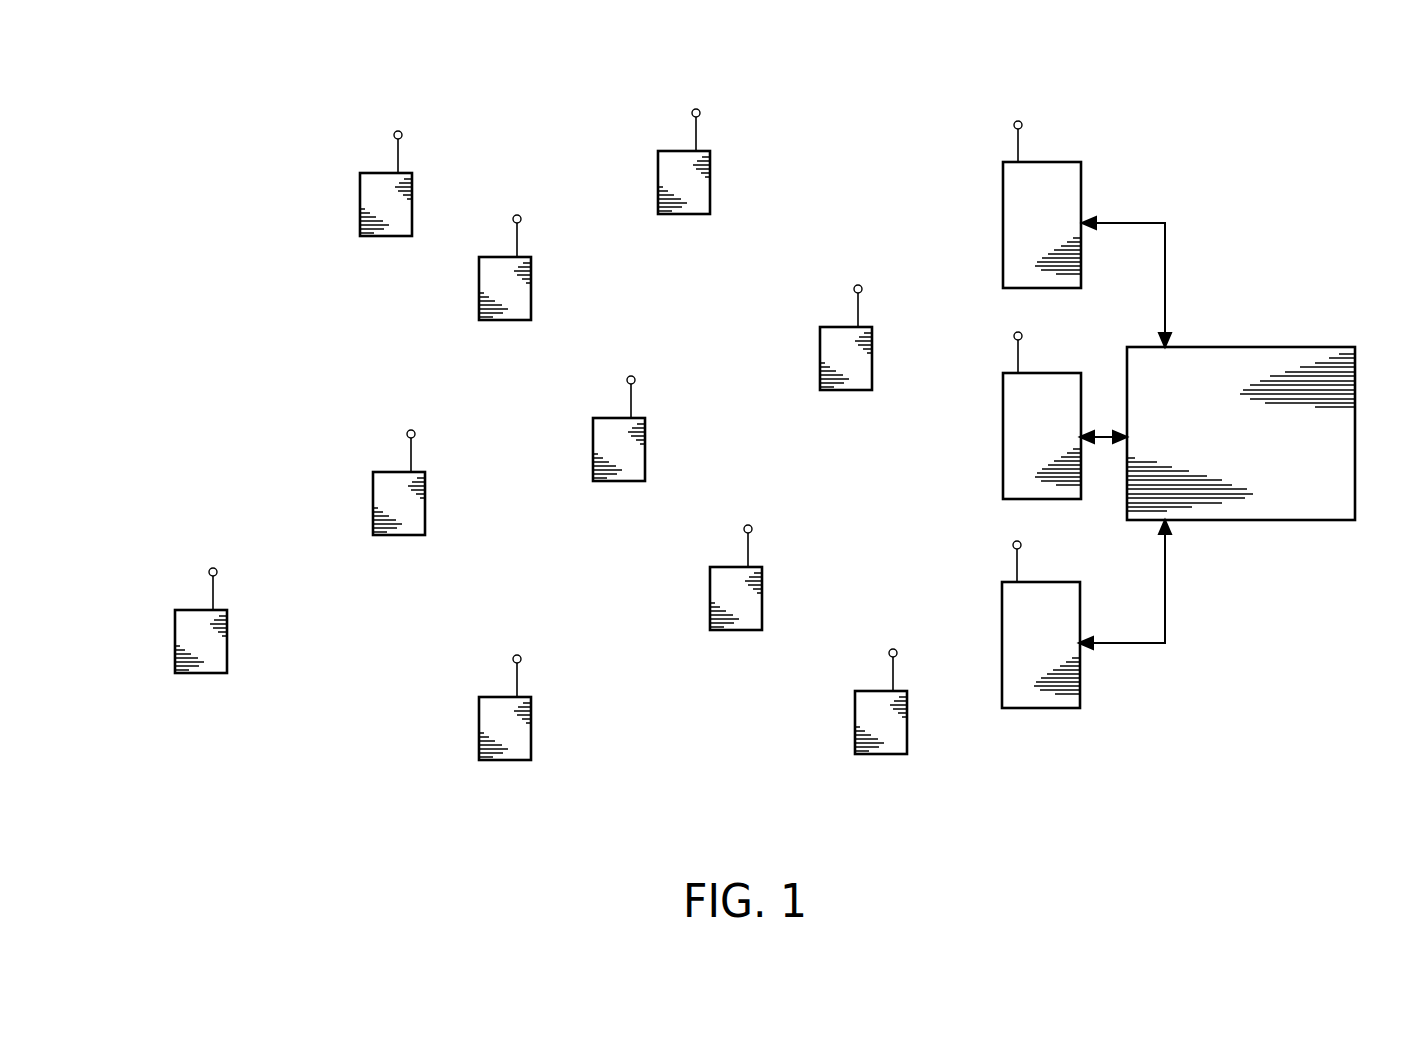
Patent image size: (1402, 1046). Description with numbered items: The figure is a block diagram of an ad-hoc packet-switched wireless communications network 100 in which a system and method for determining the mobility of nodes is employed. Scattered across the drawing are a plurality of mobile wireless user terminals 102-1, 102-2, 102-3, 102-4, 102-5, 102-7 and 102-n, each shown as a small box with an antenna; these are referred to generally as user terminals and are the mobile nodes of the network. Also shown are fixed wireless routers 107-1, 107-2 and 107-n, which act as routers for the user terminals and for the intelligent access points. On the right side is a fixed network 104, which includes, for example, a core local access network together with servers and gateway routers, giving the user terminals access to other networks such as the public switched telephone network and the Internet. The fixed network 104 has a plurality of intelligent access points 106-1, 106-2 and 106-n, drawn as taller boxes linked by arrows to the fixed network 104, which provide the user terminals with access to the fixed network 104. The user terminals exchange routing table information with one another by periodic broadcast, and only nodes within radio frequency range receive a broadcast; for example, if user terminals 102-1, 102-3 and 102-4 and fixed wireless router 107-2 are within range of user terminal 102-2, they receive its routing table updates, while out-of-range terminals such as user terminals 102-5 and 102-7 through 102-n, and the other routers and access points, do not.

The ad-hoc packet-switched wireless communications network 100 is at (845, 105).
The mobile wireless user terminal 102-1 is at (392, 236).
The mobile wireless user terminal 102-2 is at (513, 321).
The mobile wireless user terminal 102-3 is at (622, 481).
The mobile wireless user terminal 102-4 is at (396, 535).
The mobile wireless user terminal 102-5 is at (206, 673).
The mobile wireless user terminal 102-7 is at (735, 630).
The mobile wireless user terminal 102-n is at (889, 754).
The fixed network 104 is at (1252, 520).
The intelligent access point 106-1 is at (1050, 288).
The intelligent access point 106-2 is at (1043, 500).
The intelligent access point 106-n is at (1037, 709).
The fixed wireless router 107-1 is at (845, 390).
The fixed wireless router 107-2 is at (683, 214).
The fixed wireless router 107-n is at (512, 760).